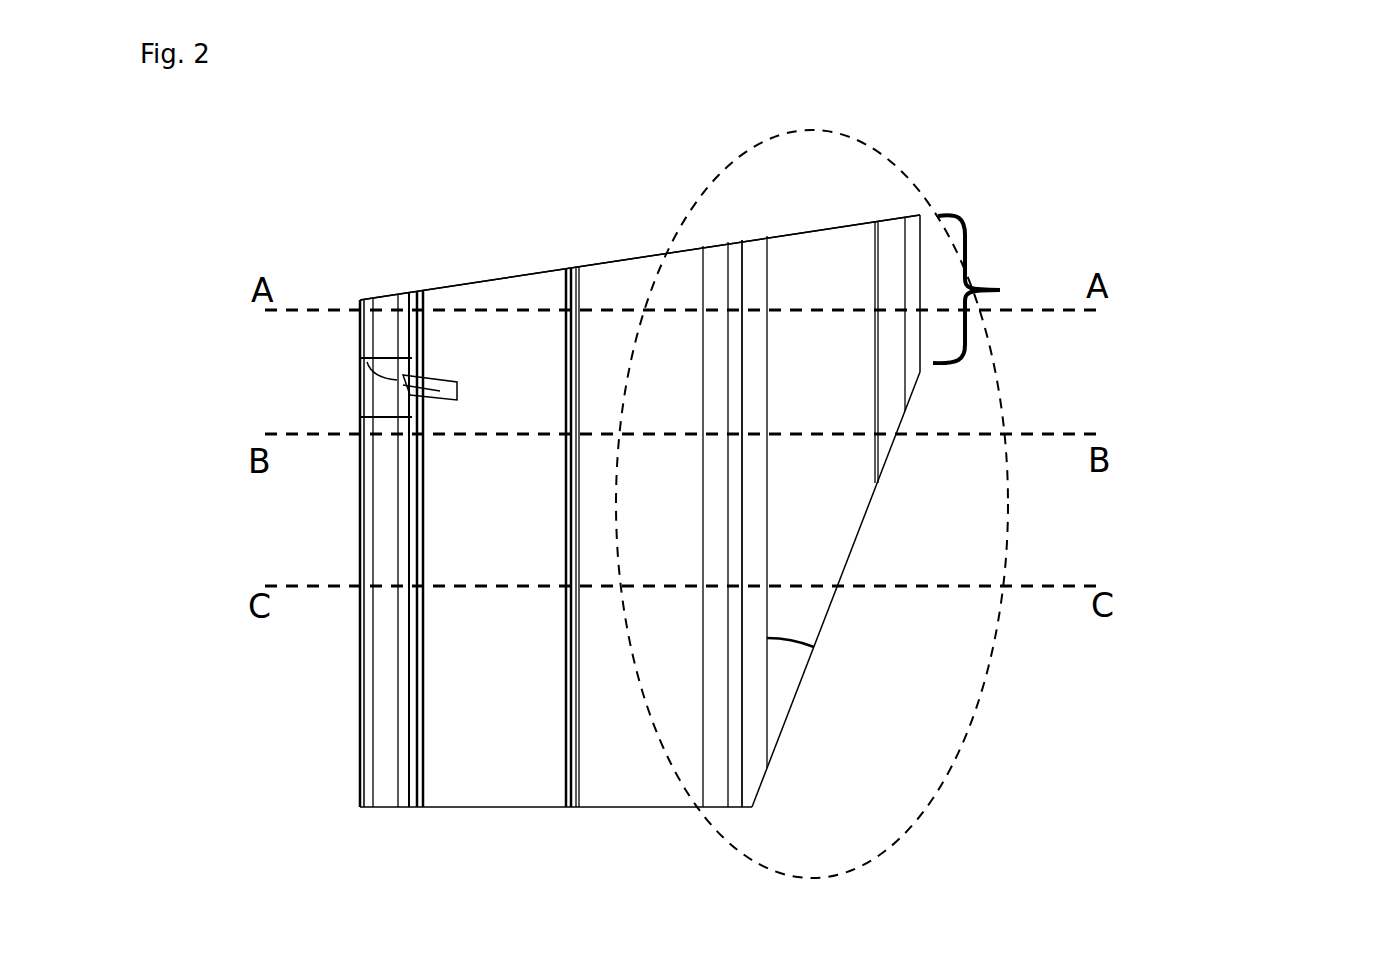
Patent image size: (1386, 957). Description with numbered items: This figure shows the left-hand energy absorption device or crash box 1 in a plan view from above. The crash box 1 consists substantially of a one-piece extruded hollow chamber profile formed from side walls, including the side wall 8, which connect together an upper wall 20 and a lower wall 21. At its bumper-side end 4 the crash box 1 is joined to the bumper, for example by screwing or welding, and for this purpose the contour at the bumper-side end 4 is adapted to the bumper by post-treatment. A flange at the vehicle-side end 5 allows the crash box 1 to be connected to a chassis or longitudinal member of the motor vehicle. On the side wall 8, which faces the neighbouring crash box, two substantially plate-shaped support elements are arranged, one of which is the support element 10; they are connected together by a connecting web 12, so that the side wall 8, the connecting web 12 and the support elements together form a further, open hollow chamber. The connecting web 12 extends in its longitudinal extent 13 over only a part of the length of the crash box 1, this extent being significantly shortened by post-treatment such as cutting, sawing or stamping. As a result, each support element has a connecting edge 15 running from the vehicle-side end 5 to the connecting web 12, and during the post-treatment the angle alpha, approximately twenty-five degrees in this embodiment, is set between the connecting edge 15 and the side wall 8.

The crash box 1 is at (1195, 142).
The bumper-side end 4 is at (264, 333).
The vehicle-side end 5 is at (267, 761).
The side wall 8 is at (737, 527).
The support element 10 is at (840, 290).
The connecting web 12 is at (917, 243).
The longitudinal extent 13 is at (990, 289).
The connecting edge 15 is at (828, 610).
The upper wall 20 is at (472, 340).
The lower wall 21 is at (358, 537).